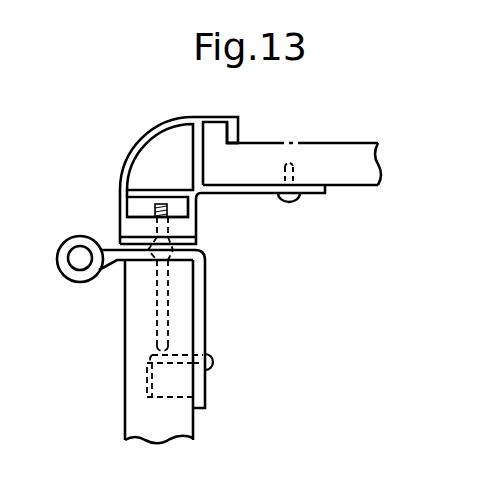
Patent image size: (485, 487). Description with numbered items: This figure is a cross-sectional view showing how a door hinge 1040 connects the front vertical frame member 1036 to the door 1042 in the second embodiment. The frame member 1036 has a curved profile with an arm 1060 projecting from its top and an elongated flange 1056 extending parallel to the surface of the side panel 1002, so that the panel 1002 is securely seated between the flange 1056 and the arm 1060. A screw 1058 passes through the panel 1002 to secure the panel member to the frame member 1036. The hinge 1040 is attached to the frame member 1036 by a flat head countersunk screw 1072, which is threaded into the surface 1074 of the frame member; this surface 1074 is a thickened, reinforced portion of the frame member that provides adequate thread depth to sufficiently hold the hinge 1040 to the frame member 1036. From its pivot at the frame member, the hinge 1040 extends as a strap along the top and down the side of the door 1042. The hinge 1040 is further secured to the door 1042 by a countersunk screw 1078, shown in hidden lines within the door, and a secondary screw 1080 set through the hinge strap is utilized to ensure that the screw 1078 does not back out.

The side panel 1002 is at (325, 155).
The front vertical frame member 1036 is at (141, 129).
The door hinge 1040 is at (64, 268).
The door 1042 is at (135, 410).
The elongated flange 1056 is at (322, 195).
The screw 1058 is at (282, 203).
The arm 1060 is at (232, 127).
The flat head countersunk screw 1072 is at (135, 207).
The surface 1074 is at (187, 226).
The countersunk screw 1078 is at (210, 385).
The secondary screw 1080 is at (215, 355).